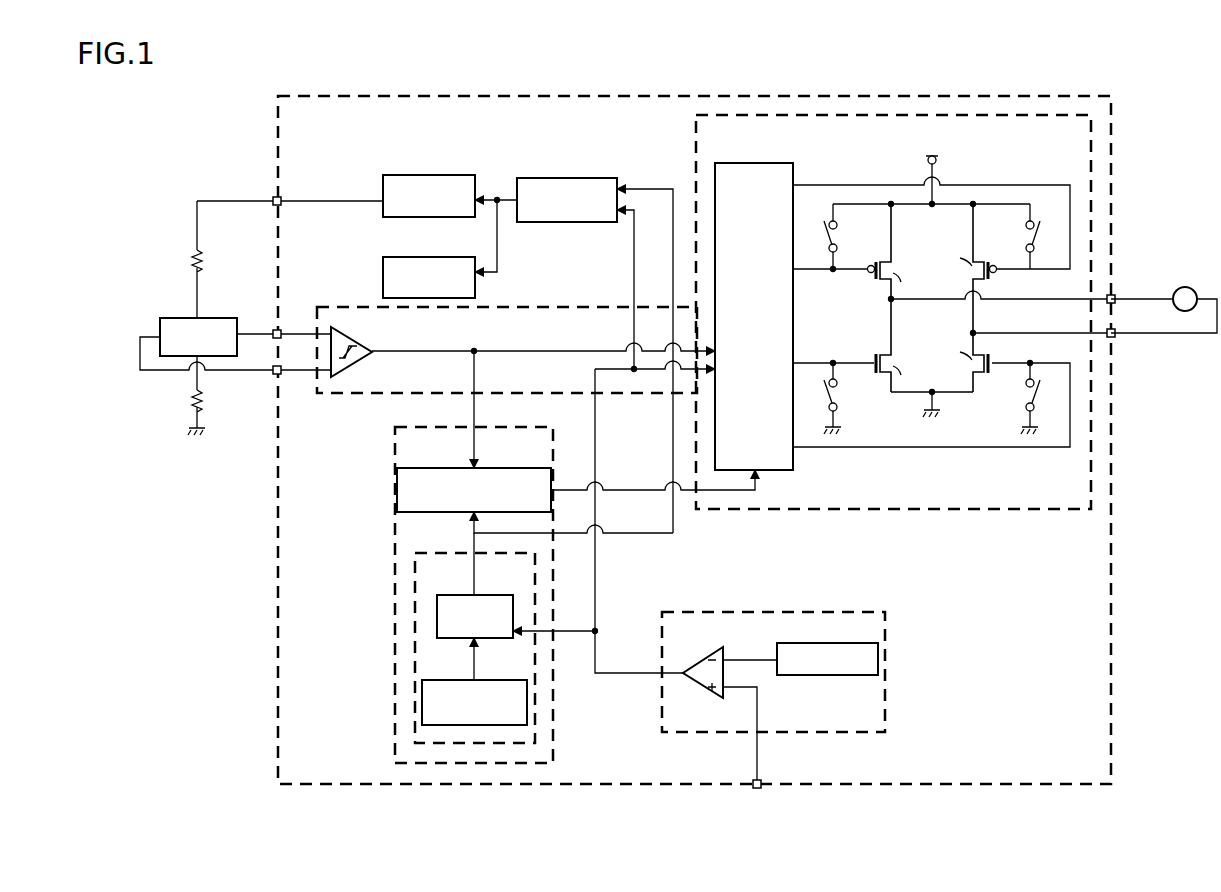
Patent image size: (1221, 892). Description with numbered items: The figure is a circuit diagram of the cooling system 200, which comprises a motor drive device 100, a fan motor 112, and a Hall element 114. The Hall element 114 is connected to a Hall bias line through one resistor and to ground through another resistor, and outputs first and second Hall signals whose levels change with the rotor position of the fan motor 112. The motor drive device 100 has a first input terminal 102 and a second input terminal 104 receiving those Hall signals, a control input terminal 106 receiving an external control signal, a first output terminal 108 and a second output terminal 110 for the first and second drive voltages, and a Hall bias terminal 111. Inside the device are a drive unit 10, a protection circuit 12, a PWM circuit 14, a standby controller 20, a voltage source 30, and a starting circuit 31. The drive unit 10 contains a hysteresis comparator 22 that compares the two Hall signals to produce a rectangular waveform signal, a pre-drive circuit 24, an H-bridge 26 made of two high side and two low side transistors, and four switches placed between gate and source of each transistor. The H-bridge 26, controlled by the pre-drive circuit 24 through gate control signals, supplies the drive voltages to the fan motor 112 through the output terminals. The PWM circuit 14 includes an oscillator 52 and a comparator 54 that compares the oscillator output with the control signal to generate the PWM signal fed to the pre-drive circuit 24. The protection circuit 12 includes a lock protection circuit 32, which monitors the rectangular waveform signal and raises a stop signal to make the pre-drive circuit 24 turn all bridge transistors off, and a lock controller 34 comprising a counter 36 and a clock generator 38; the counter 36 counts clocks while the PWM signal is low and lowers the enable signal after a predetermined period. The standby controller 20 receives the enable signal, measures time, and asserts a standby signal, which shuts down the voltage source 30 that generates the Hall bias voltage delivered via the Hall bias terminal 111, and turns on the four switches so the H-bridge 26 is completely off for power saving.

The cooling system 200 is at (678, 472).
The motor drive device 100 is at (1088, 786).
The drive unit 10 is at (1003, 510).
The protection circuit 12 is at (386, 447).
The PWM circuit 14 is at (770, 612).
The standby controller 20 is at (553, 176).
The hysteresis comparator 22 is at (356, 330).
The pre-drive circuit 24 is at (755, 163).
The H-bridge 26 is at (990, 458).
The voltage source 30 is at (432, 175).
The starting circuit 31 is at (436, 257).
The lock protection circuit 32 is at (490, 468).
The lock controller 34 is at (436, 553).
The counter 36 is at (491, 595).
The clock generator 38 is at (493, 680).
The oscillator 52 is at (828, 676).
The comparator 54 is at (706, 655).
The first input terminal 102 is at (272, 328).
The second input terminal 104 is at (274, 376).
The control input terminal 106 is at (752, 786).
The first output terminal 108 is at (1116, 293).
The second output terminal 110 is at (1116, 339).
The Hall bias terminal 111 is at (272, 195).
The fan motor 112 is at (1184, 286).
The Hall element 114 is at (180, 318).